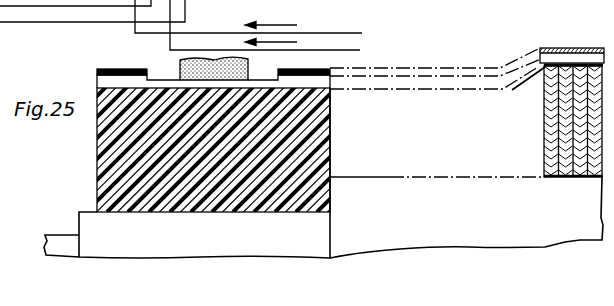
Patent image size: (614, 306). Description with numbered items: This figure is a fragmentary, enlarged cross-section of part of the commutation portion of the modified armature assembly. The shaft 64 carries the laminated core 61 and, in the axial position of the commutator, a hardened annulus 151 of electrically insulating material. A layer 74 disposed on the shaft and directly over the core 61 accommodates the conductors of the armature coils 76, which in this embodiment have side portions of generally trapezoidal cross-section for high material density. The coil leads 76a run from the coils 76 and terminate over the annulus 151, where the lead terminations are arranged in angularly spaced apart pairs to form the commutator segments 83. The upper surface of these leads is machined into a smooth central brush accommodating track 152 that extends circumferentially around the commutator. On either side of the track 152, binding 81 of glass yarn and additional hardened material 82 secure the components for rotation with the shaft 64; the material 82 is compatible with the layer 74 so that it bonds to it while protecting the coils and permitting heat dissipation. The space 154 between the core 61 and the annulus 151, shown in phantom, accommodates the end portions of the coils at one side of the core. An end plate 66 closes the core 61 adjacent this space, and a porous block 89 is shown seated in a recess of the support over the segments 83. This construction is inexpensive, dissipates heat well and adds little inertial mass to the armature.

The core 61 is at (544, 126).
The shaft 64 is at (79, 218).
The end plate 66 is at (545, 176).
The layer 74 is at (521, 86).
The armature coil 76 is at (562, 60).
The coil lead 76a is at (405, 88).
The binding 81 is at (106, 68).
The material 82 is at (544, 48).
The commutator segment 83 is at (97, 81).
The porous block 89 is at (180, 64).
The annulus 151 is at (97, 156).
The brush accommodating track 152 is at (253, 82).
The space 154 is at (363, 163).